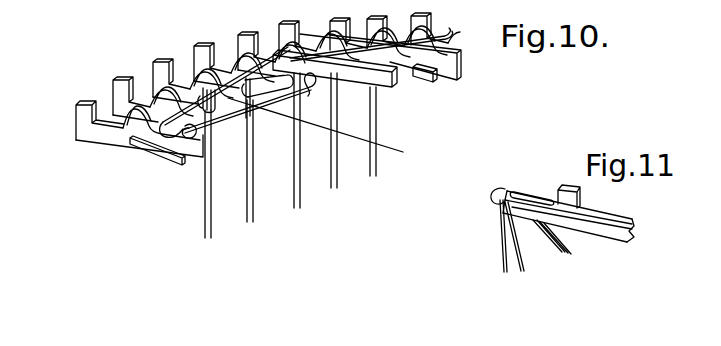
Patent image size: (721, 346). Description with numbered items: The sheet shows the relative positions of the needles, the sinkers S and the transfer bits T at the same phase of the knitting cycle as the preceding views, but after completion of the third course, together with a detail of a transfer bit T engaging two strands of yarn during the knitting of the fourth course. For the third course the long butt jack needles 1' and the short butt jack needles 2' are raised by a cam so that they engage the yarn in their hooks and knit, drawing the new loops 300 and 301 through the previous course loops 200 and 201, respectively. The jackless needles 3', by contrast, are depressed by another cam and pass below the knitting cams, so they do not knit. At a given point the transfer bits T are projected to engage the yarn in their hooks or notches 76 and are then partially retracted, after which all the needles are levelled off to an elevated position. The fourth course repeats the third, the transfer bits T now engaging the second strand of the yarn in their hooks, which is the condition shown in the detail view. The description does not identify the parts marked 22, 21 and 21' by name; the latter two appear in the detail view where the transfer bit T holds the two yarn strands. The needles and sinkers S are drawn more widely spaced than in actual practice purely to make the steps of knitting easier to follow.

In FIG. 10, the sinkers S is at (82, 123).
In FIG. 10, the previous course loop 200 is at (180, 128).
In FIG. 10, the previous course loop 201 is at (233, 71).
In FIG. 10, the loop 300 is at (206, 120).
In FIG. 10, the loop 301 is at (333, 131).
In FIG. 10, the hook 22 is at (307, 90).
In FIG. 10, the transfer bits T is at (381, 78).
In FIG. 11, the transfer bits T is at (613, 228).
In FIG. 10, the long butt jack needles 1' is at (183, 189).
In FIG. 10, the short butt jack needles 2' is at (231, 177).
In FIG. 10, the jackless needles 3' is at (278, 160).
In FIG. 11, the hooks or notches 76 is at (495, 186).
In FIG. 11, the wire 21 is at (528, 259).
In FIG. 11, the wire 21' is at (538, 260).